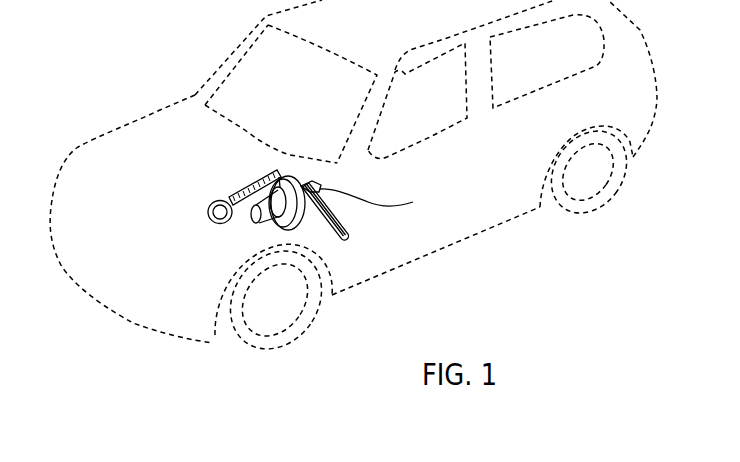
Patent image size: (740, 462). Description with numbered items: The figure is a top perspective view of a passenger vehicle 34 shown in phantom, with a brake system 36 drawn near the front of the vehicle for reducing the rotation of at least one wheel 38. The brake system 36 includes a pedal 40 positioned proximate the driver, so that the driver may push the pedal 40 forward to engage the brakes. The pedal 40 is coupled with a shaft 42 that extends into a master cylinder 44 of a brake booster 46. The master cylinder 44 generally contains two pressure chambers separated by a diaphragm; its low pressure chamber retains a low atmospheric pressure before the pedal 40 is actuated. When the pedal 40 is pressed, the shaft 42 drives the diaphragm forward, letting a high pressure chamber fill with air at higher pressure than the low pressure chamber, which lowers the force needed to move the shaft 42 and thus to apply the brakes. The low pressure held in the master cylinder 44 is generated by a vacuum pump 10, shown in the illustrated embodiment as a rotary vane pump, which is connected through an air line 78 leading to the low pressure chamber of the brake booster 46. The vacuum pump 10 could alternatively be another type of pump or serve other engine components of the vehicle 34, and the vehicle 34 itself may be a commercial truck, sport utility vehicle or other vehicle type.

The vacuum pump 10 is at (205, 191).
The passenger vehicle 34 is at (241, 33).
The brake system 36 is at (231, 166).
The wheel 38 is at (293, 357).
The pedal 40 is at (347, 232).
The shaft 42 is at (381, 202).
The master cylinder 44 is at (288, 180).
The brake booster 46 is at (273, 158).
The air line 78 is at (231, 199).